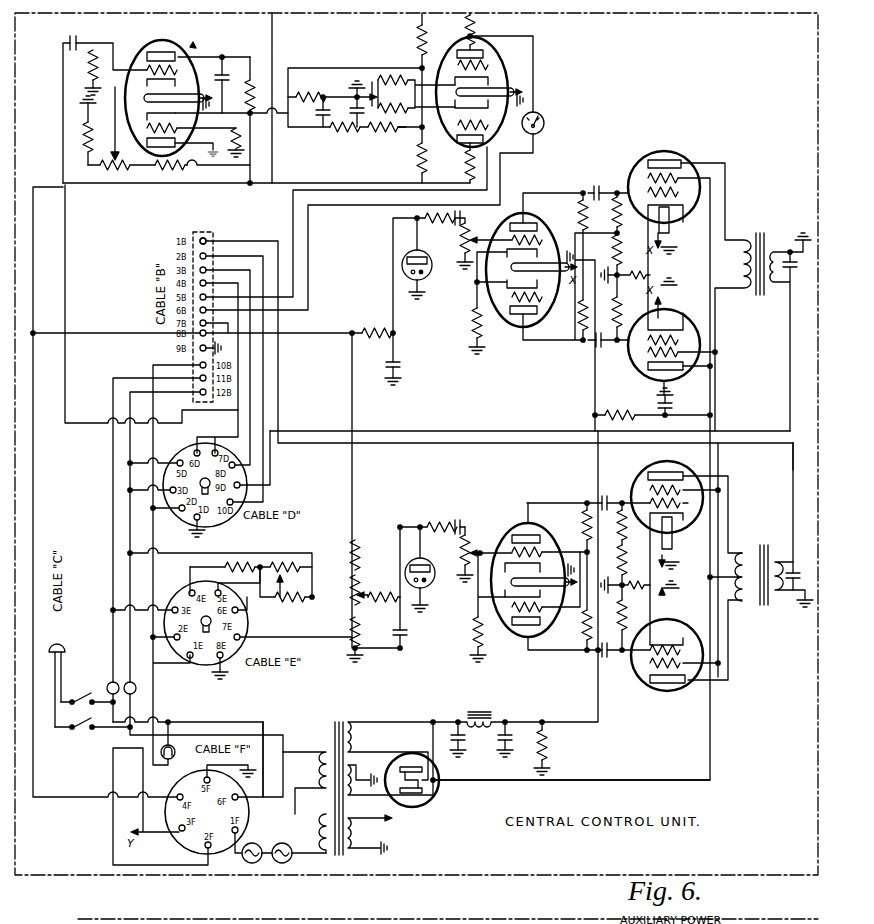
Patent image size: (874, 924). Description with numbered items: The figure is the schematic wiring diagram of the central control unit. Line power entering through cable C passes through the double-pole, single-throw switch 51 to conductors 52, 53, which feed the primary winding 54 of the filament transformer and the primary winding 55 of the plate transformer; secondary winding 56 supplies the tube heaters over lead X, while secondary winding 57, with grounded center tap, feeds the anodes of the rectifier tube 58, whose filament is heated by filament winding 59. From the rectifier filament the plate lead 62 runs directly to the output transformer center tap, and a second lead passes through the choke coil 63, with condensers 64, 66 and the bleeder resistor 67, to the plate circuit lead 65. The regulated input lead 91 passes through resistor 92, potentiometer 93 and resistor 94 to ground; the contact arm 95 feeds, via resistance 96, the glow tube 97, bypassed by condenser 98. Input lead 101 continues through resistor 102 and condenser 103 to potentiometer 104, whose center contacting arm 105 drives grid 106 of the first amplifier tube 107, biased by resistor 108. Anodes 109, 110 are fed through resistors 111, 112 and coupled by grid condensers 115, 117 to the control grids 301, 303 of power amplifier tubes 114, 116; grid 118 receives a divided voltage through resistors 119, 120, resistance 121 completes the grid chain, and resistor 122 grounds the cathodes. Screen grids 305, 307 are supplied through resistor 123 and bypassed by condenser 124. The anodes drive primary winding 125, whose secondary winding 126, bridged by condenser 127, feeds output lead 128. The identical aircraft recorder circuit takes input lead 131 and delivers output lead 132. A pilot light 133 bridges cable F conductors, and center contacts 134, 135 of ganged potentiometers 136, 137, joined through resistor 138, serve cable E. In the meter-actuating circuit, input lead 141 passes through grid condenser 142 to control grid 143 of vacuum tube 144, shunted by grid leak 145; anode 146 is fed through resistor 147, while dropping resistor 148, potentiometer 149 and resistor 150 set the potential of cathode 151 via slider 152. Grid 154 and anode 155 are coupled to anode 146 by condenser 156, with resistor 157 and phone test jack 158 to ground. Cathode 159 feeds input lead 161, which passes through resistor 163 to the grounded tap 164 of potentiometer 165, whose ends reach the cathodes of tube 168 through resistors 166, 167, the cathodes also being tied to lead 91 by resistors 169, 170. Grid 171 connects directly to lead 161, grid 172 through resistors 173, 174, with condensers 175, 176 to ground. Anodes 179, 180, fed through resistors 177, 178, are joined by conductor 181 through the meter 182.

The double-pole, single-throw switch 51 is at (95, 721).
The conductor 52 is at (266, 719).
The conductor 53 is at (63, 688).
The primary winding of the filament power transformer 54 is at (319, 842).
The primary winding of the plate power transformer 55 is at (304, 783).
The secondary winding 56 is at (375, 833).
The secondary winding 57 is at (390, 758).
The rectifier tube 58 is at (432, 792).
The filament winding 59 is at (390, 751).
The plate lead 62 is at (687, 784).
The choke coil 63 is at (469, 710).
The condenser 64 is at (451, 739).
The plate circuit lead 65 is at (578, 721).
The condenser 66 is at (519, 739).
The bleeder resistor 67 is at (552, 748).
The input lead 91 is at (252, 186).
The resistor 92 is at (365, 555).
The linear wire-wound potentiometer 93 is at (357, 595).
The resistor 94 is at (363, 639).
The contact arm 95 is at (365, 589).
The resistance 96 is at (384, 604).
The glow tube 97 is at (428, 569).
The condenser 98 is at (387, 625).
The input lead 101 is at (405, 527).
The resistor 102 is at (428, 516).
The condenser 103 is at (468, 517).
The potentiometer 104 is at (467, 538).
The center contacting arm 105 is at (491, 558).
The grid 106 is at (545, 556).
The first amplifier tube 107 is at (512, 524).
The self-biasing resistor 108 is at (453, 607).
The anode 109 is at (538, 535).
The anode 110 is at (518, 626).
The resistor 111 is at (583, 512).
The resistor 112 is at (579, 625).
The power amplifier tube 114 is at (660, 470).
The grid condenser 115 is at (604, 497).
The power amplifier tube 116 is at (688, 692).
The grid condenser 117 is at (604, 660).
The grid 118 is at (512, 607).
The resistor 119 is at (635, 521).
The resistor 120 is at (635, 570).
The resistance 121 is at (635, 625).
The resistor 122 is at (627, 591).
The resistor 123 is at (620, 412).
The condenser 124 is at (668, 403).
The primary winding 125 is at (746, 551).
The secondary winding 126 is at (776, 561).
The condenser 127 is at (797, 572).
The output lead 128 is at (792, 478).
The input lead 131 is at (293, 334).
The output lead 132 is at (307, 431).
The pilot light 133 is at (172, 745).
The center contact 134 is at (284, 580).
The center contact 135 is at (278, 598).
The potentiometer 136 is at (285, 565).
The potentiometer 137 is at (292, 598).
The resistor 138 is at (240, 565).
The input lead 141 is at (65, 244).
The grid condenser 142 is at (72, 36).
The control grid 143 is at (146, 68).
The vacuum tube 144 is at (192, 46).
The grid leak 145 is at (83, 63).
The anode 146 is at (163, 51).
The resistor 147 is at (253, 80).
The dropping resistor 148 is at (170, 172).
The wire-wound potentiometer 149 is at (114, 172).
The resistor 150 is at (80, 130).
The cathode 151 is at (161, 84).
The slider 152 is at (113, 158).
The grid 154 is at (147, 128).
The anode 155 is at (156, 146).
The condenser 156 is at (215, 85).
The resistor 157 is at (245, 146).
The phone test jack 158 is at (195, 166).
The cathode 159 is at (161, 115).
The input lead 161 is at (288, 120).
The resistor 163 is at (311, 87).
The central adjustable tap 164 is at (374, 92).
The potentiometer 165 is at (382, 97).
The resistor 166 is at (388, 78).
The resistor 167 is at (401, 127).
The tube 168 is at (506, 73).
The resistor 169 is at (418, 36).
The resistor 170 is at (418, 152).
The grid 171 is at (490, 66).
The grid 172 is at (490, 126).
The resistor 173 is at (383, 134).
The resistor 174 is at (345, 134).
The condenser 175 is at (352, 103).
The condenser 176 is at (320, 118).
The resistor 177 is at (484, 29).
The resistor 178 is at (468, 167).
The anode 179 is at (484, 55).
The anode 180 is at (497, 148).
The conductor 181 is at (533, 36).
The meter 182 is at (545, 123).
The control grid 301 is at (688, 505).
The control grid 303 is at (688, 648).
The screen grid 305 is at (650, 490).
The screen grid 307 is at (655, 665).